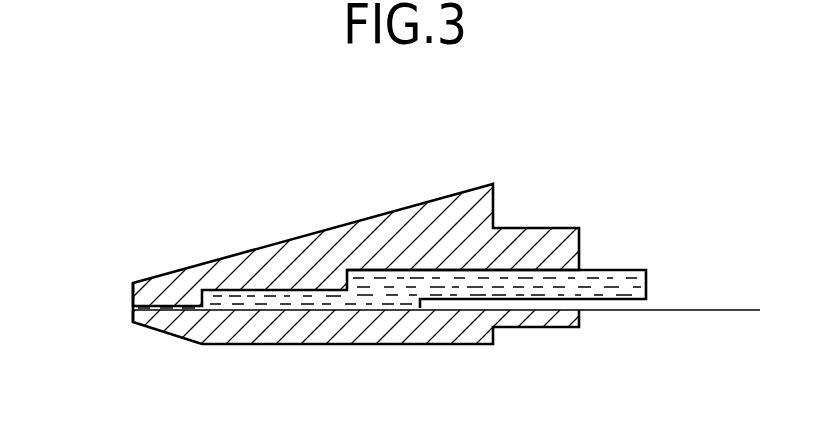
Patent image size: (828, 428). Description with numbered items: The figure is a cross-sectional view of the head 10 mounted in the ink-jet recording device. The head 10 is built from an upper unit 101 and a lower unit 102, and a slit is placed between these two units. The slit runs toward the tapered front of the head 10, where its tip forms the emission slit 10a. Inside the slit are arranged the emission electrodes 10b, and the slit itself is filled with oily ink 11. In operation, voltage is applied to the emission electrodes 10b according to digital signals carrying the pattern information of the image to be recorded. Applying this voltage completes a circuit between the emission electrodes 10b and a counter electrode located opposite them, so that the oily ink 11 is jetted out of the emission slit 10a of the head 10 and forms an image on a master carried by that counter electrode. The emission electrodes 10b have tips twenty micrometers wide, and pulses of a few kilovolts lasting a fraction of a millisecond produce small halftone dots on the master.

The head 10 is at (562, 176).
The emission slit 10a is at (132, 307).
The emission electrodes 10b is at (603, 313).
The upper unit 101 is at (424, 208).
The lower unit 102 is at (426, 338).
The oily ink 11 is at (525, 292).